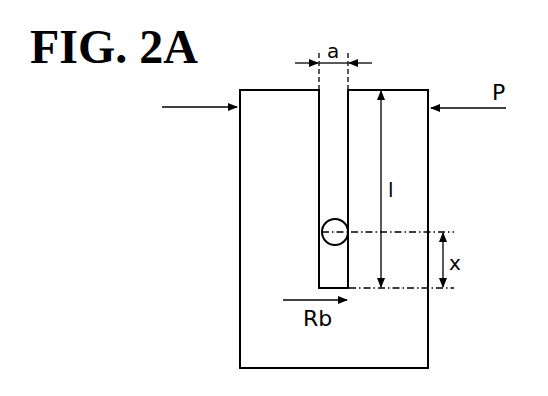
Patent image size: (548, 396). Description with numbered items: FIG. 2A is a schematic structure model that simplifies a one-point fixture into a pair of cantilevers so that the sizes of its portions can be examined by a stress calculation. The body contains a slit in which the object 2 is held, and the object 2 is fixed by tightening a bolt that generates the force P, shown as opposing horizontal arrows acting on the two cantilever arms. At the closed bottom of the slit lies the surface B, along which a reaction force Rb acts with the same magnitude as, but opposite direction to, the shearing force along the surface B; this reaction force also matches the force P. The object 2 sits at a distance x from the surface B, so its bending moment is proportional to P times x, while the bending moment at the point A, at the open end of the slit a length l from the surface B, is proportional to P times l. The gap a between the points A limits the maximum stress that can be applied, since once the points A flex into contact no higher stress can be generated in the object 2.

The object 2 is at (329, 219).
The point A is at (318, 88).
The surface B is at (350, 290).